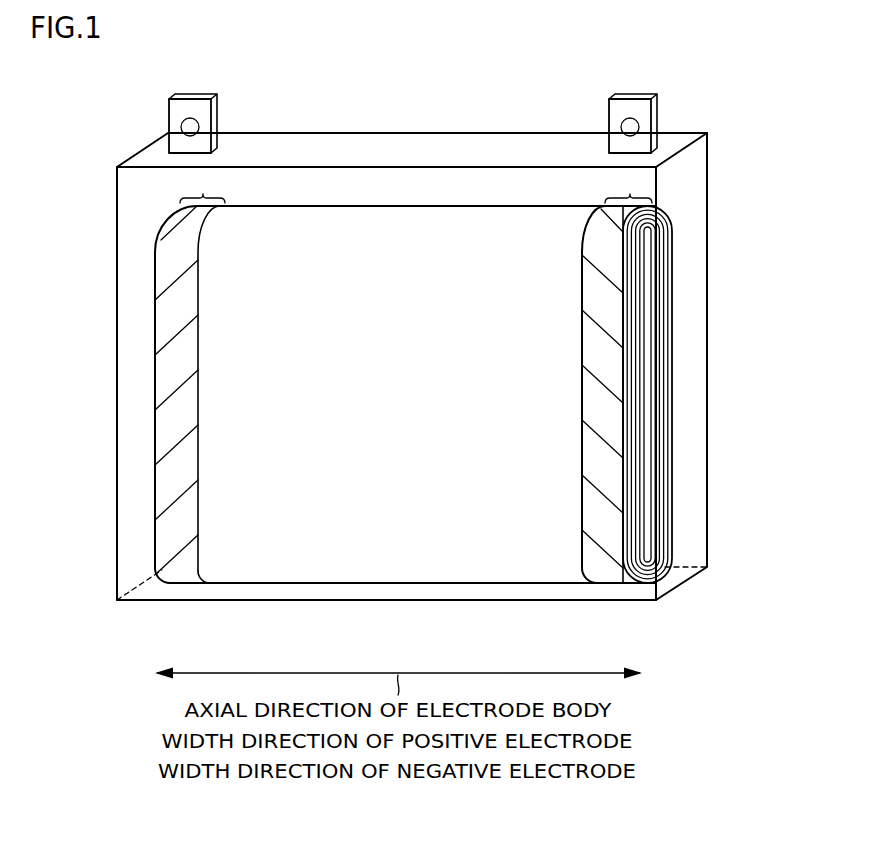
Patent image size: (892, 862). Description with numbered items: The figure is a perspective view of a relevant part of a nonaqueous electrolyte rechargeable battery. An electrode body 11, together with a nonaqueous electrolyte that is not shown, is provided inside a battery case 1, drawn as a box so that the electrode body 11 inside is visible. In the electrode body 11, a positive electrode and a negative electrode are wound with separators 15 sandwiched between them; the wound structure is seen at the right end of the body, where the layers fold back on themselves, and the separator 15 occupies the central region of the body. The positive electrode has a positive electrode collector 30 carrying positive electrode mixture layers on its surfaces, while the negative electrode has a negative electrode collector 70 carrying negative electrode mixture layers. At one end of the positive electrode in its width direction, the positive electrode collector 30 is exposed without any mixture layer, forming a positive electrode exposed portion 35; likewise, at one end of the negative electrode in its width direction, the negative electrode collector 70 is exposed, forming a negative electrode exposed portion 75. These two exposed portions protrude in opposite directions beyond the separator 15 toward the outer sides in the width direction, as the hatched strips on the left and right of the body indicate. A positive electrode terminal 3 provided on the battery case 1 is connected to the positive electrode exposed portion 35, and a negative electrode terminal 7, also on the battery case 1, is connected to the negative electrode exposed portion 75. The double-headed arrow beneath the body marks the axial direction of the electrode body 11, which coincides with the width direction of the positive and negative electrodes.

The battery case 1 is at (690, 183).
The positive electrode terminal 3 is at (190, 105).
The negative electrode terminal 7 is at (629, 105).
The electrode body 11 is at (383, 202).
The separator 15 is at (415, 570).
The positive electrode collector 30 is at (182, 568).
The positive electrode exposed portion 35 is at (203, 194).
The negative electrode collector 70 is at (607, 570).
The negative electrode exposed portion 75 is at (630, 194).